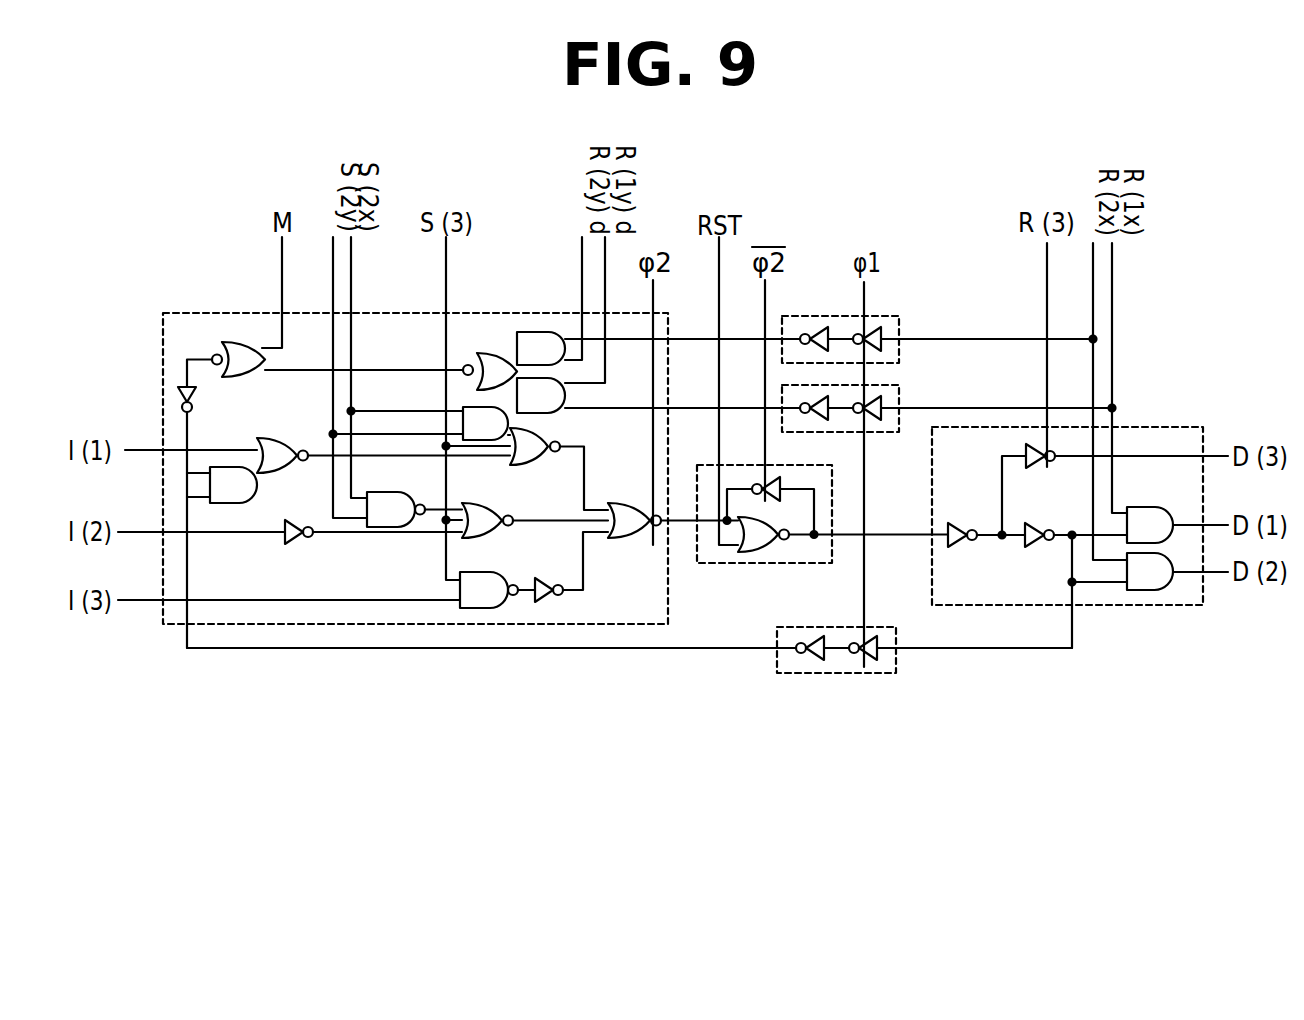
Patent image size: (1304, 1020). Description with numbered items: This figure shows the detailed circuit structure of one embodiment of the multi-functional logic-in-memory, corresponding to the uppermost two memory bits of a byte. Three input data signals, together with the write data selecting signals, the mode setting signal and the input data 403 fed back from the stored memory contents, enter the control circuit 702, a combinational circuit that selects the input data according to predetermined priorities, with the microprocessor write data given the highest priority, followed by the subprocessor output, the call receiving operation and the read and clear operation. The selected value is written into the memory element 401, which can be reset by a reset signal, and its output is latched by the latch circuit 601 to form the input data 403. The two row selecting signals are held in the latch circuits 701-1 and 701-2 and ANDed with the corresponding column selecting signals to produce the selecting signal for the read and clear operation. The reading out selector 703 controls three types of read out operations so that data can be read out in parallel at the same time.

The memory element 401 is at (805, 565).
The input data 403 is at (287, 648).
The latch circuit 601 is at (867, 673).
The latch circuit 701-1 is at (877, 313).
The latch circuit 701-2 is at (882, 383).
The control circuit 702 is at (228, 312).
The reading out selector 703 is at (1158, 427).